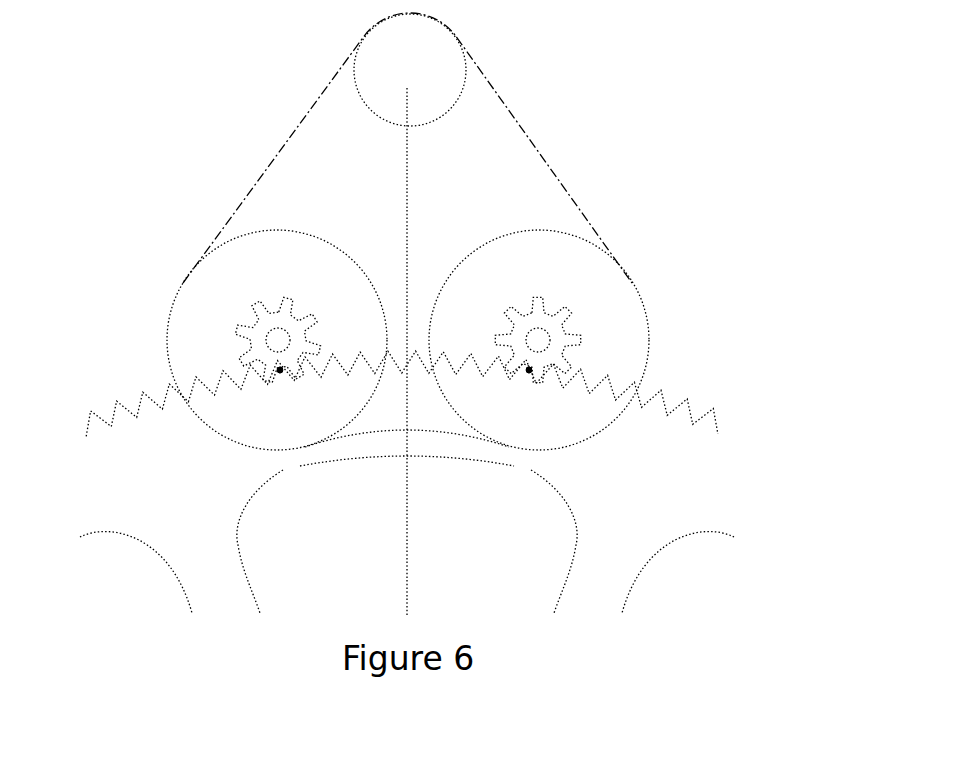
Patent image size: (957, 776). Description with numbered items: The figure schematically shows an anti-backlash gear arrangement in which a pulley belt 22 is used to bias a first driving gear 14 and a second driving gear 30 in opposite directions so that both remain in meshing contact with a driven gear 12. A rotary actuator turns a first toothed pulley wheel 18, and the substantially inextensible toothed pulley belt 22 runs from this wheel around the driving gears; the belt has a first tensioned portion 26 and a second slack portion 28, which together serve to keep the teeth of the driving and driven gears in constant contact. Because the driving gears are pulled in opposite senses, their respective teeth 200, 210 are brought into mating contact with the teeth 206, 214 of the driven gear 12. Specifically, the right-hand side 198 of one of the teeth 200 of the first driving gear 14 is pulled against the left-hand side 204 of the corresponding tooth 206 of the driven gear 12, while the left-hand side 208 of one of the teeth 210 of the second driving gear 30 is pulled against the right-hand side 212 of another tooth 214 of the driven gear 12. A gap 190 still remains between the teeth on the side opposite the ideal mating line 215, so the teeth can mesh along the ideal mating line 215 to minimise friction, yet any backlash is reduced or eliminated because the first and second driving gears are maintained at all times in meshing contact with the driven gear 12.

The driven gear 12 is at (661, 517).
The first driving gear 14 is at (560, 325).
The first toothed pulley wheel 18 is at (429, 82).
The pulley belt 22 is at (555, 175).
The first tensioned portion 26 is at (540, 157).
The second slack portion 28 is at (412, 432).
The second driving gear 30 is at (258, 310).
The gap 190 is at (517, 363).
The right-hand side of tooth 198 is at (530, 366).
The teeth of first driving gear 200 is at (528, 368).
The left-hand side of tooth 204 is at (528, 372).
The tooth of driven gear 206 is at (530, 375).
The left-hand side of tooth 208 is at (278, 368).
The teeth of second driving gear 210 is at (281, 365).
The right-hand side of tooth 212 is at (278, 370).
The tooth of driven gear 214 is at (273, 380).
The ideal mating line 215 is at (281, 378).